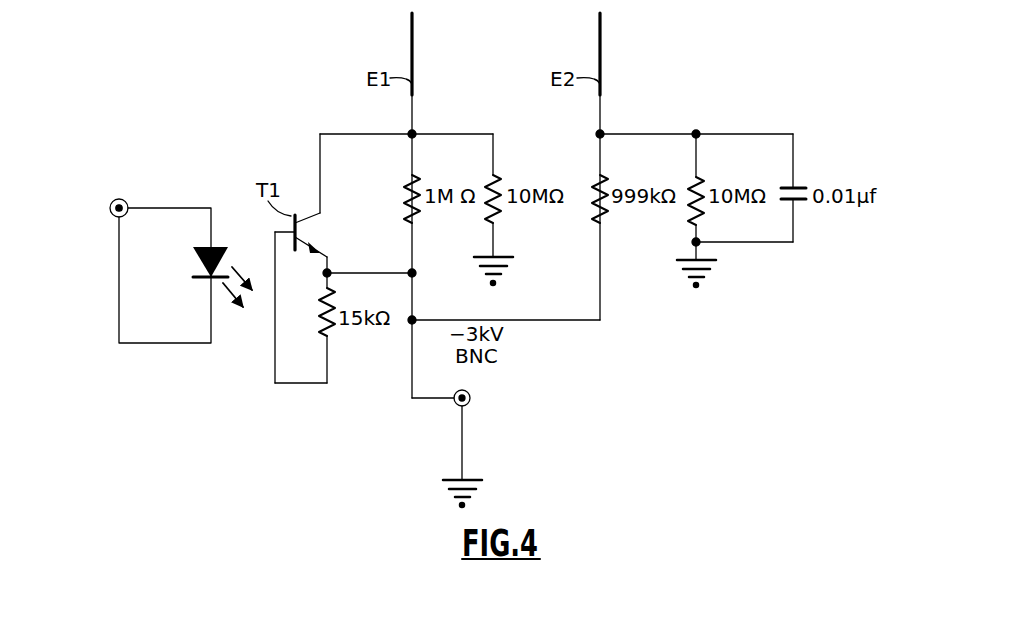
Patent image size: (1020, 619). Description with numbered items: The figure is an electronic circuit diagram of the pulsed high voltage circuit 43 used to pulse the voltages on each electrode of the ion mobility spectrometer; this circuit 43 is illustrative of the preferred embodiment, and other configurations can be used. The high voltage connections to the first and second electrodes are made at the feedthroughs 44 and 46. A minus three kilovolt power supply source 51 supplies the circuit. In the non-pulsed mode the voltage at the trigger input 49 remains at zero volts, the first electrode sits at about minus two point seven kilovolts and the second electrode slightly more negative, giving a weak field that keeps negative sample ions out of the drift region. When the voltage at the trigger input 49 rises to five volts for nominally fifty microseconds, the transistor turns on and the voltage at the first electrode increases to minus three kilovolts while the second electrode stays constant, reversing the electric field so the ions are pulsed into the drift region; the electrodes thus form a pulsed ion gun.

The pulsed high voltage circuit 43 is at (131, 126).
The feedthrough 44 is at (412, 18).
The feedthrough 46 is at (600, 18).
The trigger input 49 is at (110, 208).
The power supply source 51 is at (470, 397).